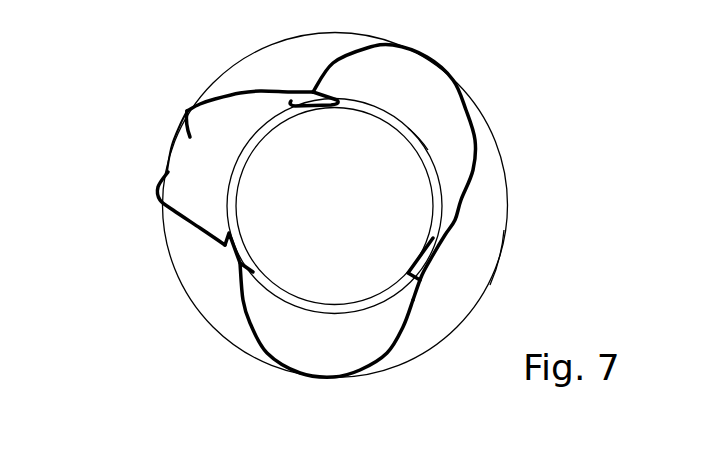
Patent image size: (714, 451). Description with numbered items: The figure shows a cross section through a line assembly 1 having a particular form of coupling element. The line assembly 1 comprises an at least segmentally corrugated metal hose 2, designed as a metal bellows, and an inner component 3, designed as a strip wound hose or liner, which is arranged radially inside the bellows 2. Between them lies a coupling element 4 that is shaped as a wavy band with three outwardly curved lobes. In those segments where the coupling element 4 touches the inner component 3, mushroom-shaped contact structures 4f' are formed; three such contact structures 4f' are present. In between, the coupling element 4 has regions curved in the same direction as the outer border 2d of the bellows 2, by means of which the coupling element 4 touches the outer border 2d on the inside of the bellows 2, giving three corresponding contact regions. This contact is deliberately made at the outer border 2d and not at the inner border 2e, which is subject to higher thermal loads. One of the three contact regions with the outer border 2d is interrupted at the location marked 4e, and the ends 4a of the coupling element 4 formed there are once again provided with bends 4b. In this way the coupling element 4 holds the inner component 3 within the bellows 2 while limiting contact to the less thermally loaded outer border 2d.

The line assembly 1 is at (135, 273).
The metal hose 2 is at (533, 208).
The outer border 2d is at (500, 258).
The inner border 2e is at (422, 128).
The inner component 3 is at (298, 296).
The coupling element 4 is at (306, 210).
The ends 4a is at (160, 112).
The bends 4b is at (186, 128).
The interruption 4e is at (174, 155).
The mushroom-shaped contact structures 4f' is at (314, 151).